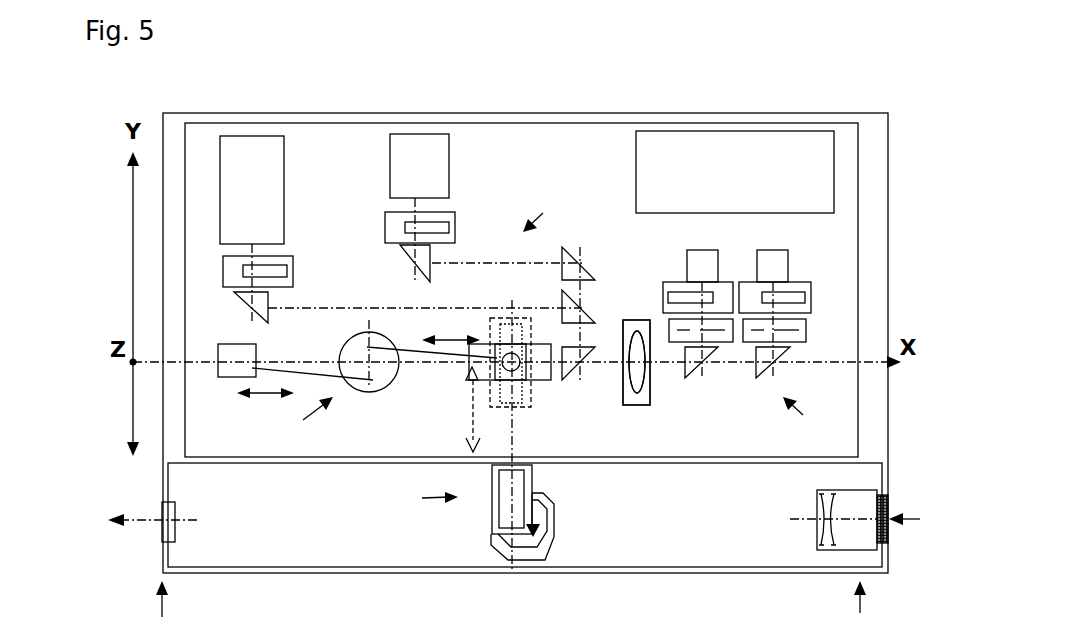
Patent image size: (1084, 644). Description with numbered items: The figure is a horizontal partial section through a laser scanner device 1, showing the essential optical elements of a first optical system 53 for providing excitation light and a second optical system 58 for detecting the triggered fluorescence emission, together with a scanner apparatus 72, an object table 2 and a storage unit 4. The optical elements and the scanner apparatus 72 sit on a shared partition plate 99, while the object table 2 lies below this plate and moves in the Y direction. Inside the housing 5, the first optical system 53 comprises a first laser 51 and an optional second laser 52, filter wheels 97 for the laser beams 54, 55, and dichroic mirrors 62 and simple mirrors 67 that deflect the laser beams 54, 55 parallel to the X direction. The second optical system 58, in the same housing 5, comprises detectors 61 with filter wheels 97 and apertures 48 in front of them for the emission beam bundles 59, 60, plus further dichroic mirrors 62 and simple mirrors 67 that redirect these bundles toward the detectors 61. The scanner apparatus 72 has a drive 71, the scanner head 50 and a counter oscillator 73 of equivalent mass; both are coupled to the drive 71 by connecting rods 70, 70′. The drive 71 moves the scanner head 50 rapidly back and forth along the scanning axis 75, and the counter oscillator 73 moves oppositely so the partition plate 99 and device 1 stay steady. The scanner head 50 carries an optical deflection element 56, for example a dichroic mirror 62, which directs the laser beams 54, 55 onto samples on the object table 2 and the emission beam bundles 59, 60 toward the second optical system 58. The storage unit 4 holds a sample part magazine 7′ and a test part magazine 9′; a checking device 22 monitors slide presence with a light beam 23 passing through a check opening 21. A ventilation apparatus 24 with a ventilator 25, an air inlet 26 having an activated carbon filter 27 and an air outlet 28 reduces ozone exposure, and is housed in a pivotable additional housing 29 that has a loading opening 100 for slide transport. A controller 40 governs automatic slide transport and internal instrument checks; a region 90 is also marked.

The laser scanner device 1 is at (817, 103).
The object table 2 is at (500, 403).
The storage unit 4 is at (433, 497).
The housing 5 is at (528, 112).
The sample part magazine 7′ is at (502, 492).
The test part magazine 9′ is at (495, 512).
The check opening 21 is at (549, 552).
The checking device 22 is at (557, 535).
The light beam 23 is at (537, 508).
The ventilation apparatus 24 is at (523, 609).
The ventilator 25 is at (825, 513).
The air inlet 26 is at (903, 513).
The activated carbon filter 27 is at (877, 527).
The air outlet 28 is at (137, 523).
The additional housing 29 is at (222, 563).
The controller 40 is at (735, 166).
The apertures 48 is at (808, 330).
The scanner head 50 is at (525, 372).
The first laser 51 is at (239, 193).
The second laser 52 is at (406, 193).
The first optical system 53 is at (545, 213).
The laser beam 54 is at (400, 304).
The laser beam 55 is at (512, 255).
The optical deflection element 56 is at (469, 379).
The second optical system 58 is at (806, 418).
The emission beam bundle 59 is at (667, 367).
The emission beam bundle 60 is at (636, 362).
The detector 61 is at (705, 262).
The dichroic mirror 62 is at (587, 308).
The simple mirror 67 is at (258, 315).
The connecting rod 70 is at (423, 355).
The connecting rod 70′ is at (315, 373).
The drive 71 is at (366, 389).
The scanner apparatus 72 is at (307, 418).
The counter oscillator 73 is at (230, 377).
The scanning axis 75 is at (451, 329).
The measurement region 90 is at (483, 343).
The filter wheel 97 is at (283, 269).
The partition plate 99 is at (344, 193).
The loading opening 100 is at (503, 455).